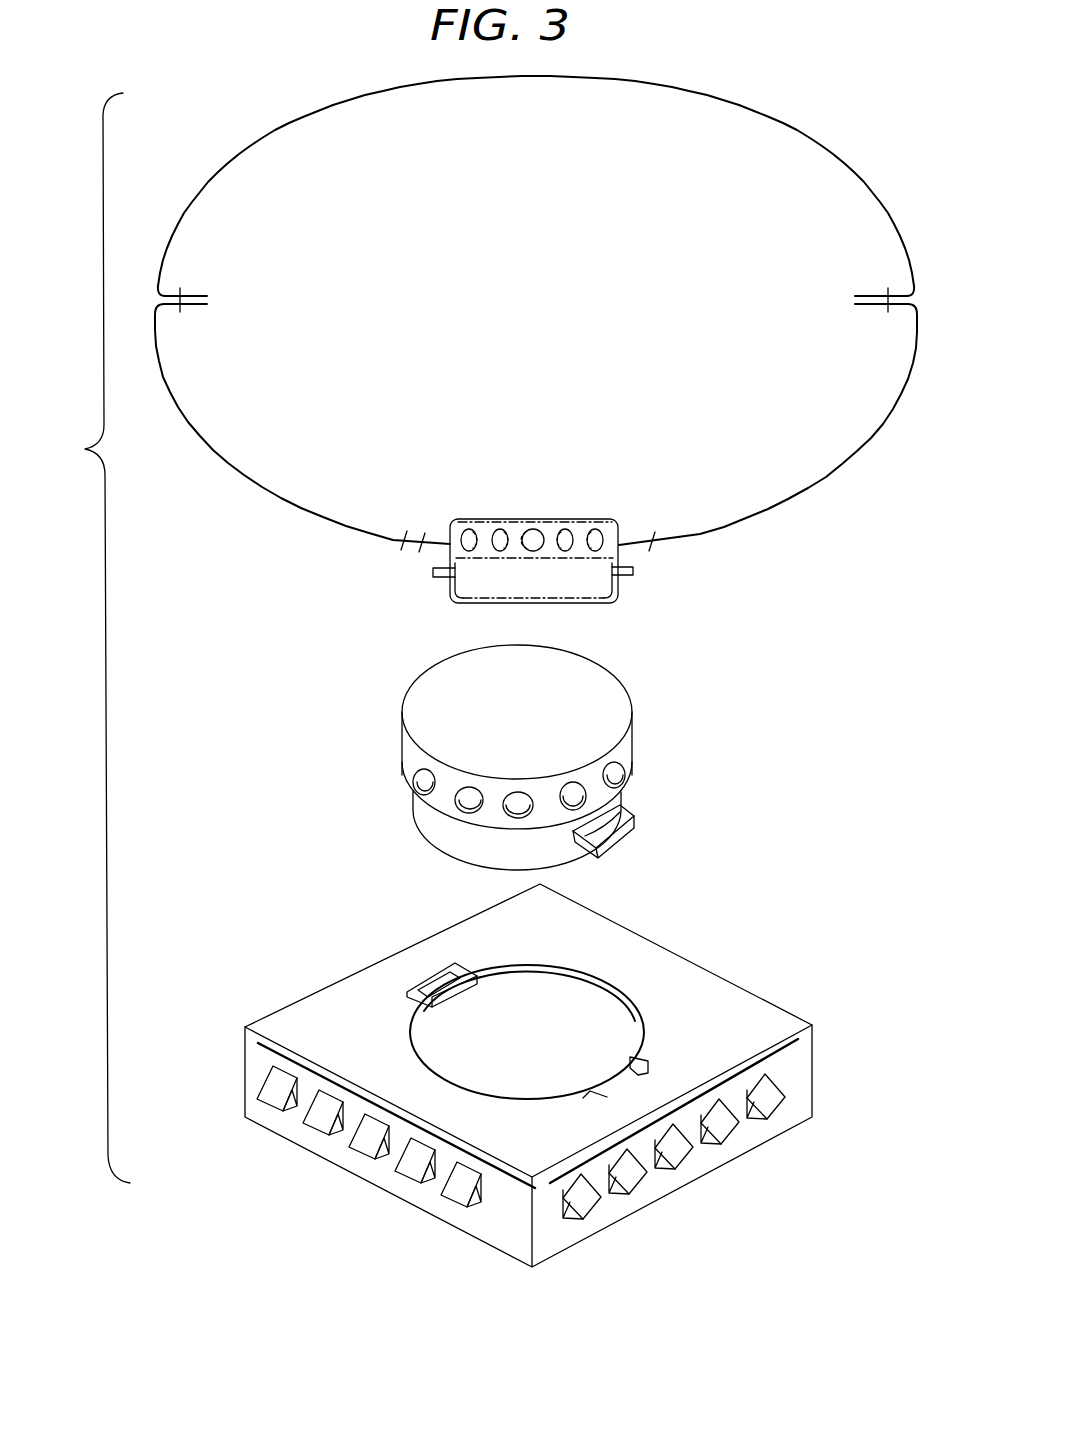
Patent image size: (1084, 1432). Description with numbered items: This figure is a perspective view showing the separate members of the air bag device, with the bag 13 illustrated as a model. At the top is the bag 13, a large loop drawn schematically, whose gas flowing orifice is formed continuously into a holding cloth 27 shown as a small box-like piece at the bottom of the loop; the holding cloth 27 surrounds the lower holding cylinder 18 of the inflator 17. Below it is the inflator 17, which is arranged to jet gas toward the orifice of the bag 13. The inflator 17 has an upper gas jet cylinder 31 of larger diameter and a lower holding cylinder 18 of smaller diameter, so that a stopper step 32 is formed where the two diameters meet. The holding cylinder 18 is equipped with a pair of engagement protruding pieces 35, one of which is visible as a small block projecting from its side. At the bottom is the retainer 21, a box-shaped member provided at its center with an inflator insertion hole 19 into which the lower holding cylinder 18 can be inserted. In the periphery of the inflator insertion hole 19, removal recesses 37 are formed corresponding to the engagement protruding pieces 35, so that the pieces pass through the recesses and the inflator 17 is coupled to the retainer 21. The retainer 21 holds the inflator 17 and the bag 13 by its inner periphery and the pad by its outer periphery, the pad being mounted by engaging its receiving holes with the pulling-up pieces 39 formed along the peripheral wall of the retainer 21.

The bag 13 is at (895, 405).
The inflator 17 is at (550, 521).
The lower holding cylinder 18 is at (578, 583).
The inflator insertion hole 19 is at (600, 988).
The retainer 21 is at (702, 965).
The holding cloth 27 is at (447, 588).
The upper gas jet cylinder 31 is at (608, 698).
The stopper step 32 is at (628, 790).
The engagement protruding pieces 35 is at (628, 580).
The removal recesses 37 is at (438, 970).
The pulling-up pieces 39 is at (770, 1093).